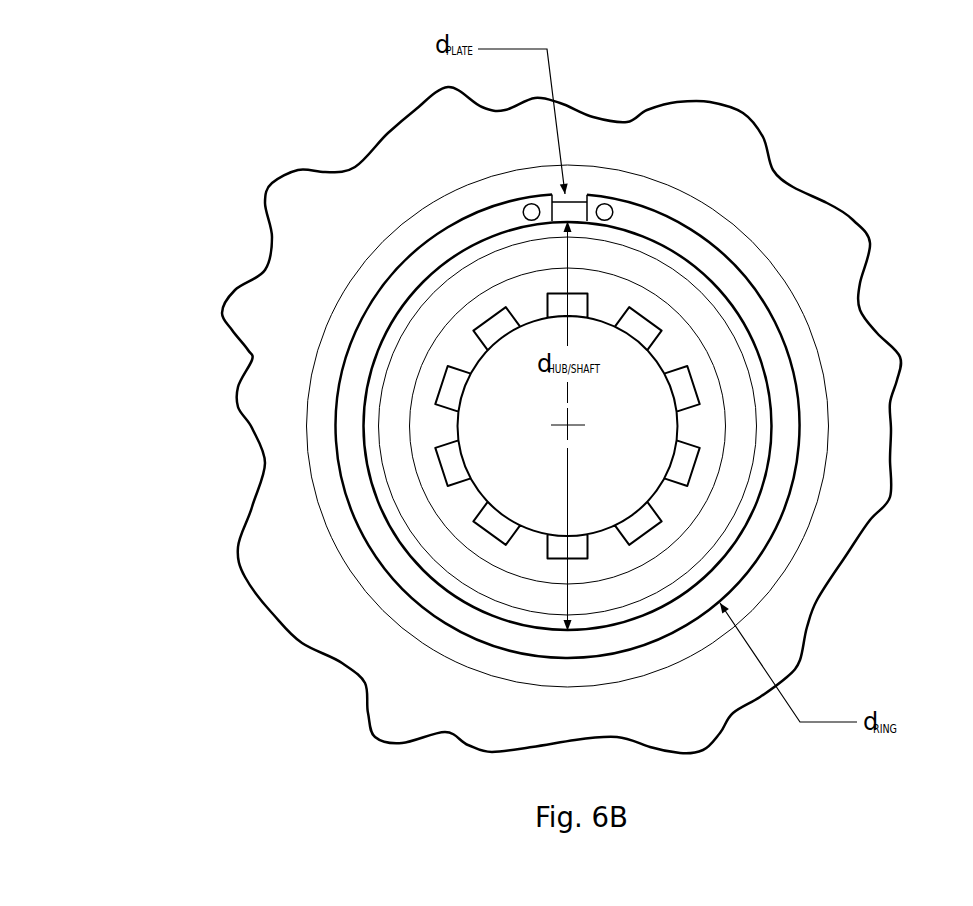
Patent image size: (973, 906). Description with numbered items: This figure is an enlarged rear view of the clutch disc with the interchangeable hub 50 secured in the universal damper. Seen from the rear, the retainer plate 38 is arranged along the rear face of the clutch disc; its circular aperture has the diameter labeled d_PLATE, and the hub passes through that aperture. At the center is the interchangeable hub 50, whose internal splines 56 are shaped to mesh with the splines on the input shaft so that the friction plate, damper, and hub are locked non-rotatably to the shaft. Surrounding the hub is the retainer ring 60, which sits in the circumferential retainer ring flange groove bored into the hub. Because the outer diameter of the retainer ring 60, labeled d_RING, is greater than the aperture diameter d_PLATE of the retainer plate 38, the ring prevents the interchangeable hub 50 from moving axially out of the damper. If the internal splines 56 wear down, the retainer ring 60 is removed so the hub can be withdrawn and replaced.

The retainer plate 38 is at (577, 213).
The interchangeable hub 50 is at (743, 415).
The internal splines 56 is at (467, 503).
The retainer ring 60 is at (355, 411).